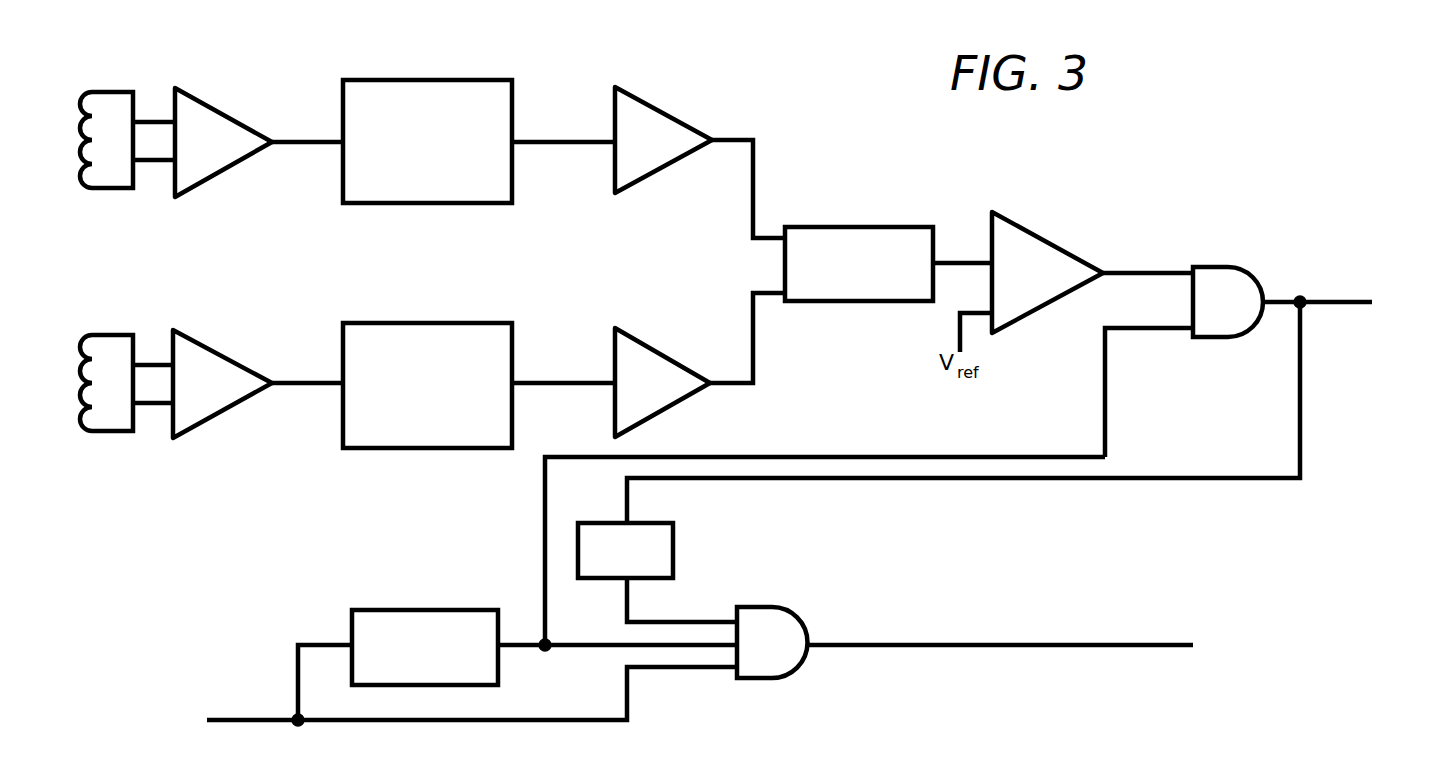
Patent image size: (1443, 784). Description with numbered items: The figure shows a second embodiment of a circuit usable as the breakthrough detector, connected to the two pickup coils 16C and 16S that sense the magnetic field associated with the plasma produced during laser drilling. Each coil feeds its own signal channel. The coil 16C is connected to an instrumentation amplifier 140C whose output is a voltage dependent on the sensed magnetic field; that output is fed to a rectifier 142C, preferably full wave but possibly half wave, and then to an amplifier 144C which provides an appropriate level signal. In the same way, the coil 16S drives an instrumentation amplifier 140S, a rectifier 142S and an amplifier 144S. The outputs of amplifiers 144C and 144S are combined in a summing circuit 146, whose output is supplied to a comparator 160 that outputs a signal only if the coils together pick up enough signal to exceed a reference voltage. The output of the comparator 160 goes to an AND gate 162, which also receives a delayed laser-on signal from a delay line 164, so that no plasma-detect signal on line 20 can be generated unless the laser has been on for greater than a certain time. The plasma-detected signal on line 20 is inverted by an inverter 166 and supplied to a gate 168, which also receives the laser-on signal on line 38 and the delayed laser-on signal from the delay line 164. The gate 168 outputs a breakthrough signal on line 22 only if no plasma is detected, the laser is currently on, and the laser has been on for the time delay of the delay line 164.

The coil 16C is at (94, 91).
The instrumentation amplifier 140C is at (224, 111).
The rectifier 142C is at (425, 79).
The amplifier 144C is at (688, 121).
The coil 16S is at (90, 335).
The instrumentation amplifier 140S is at (220, 352).
The rectifier 142S is at (420, 323).
The amplifier 144S is at (672, 362).
The summing circuit 146 is at (832, 226).
The comparator 160 is at (1058, 244).
The AND gate 162 is at (1226, 266).
The line 20 is at (1340, 305).
The delay line 164 is at (414, 609).
The inverter 166 is at (673, 556).
The gate 168 is at (800, 612).
The line 22 is at (1054, 648).
The line 38 is at (272, 722).